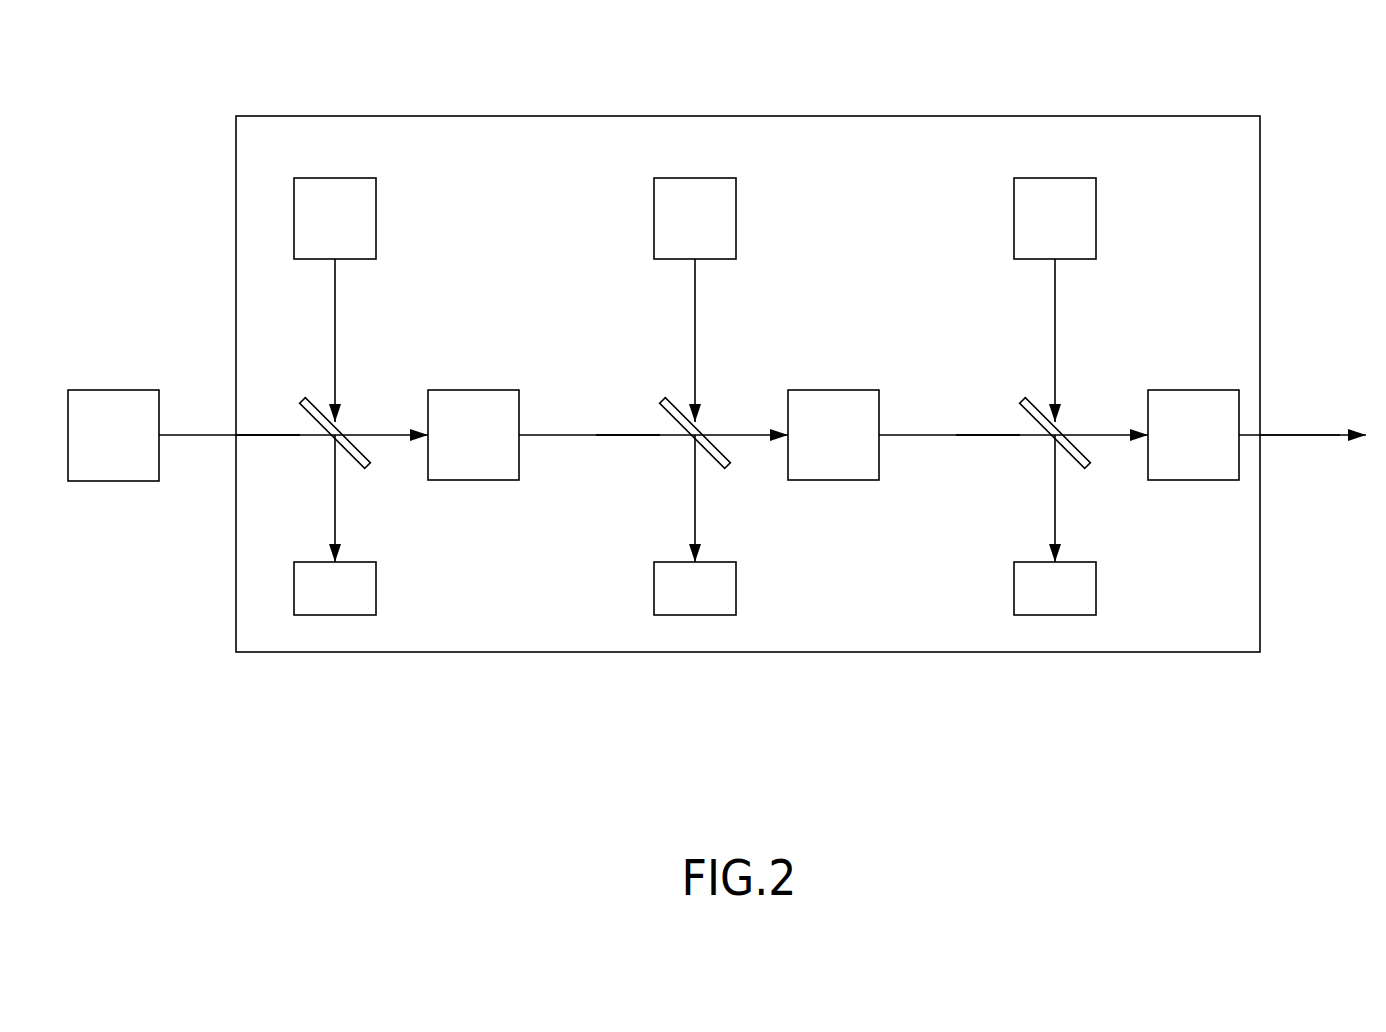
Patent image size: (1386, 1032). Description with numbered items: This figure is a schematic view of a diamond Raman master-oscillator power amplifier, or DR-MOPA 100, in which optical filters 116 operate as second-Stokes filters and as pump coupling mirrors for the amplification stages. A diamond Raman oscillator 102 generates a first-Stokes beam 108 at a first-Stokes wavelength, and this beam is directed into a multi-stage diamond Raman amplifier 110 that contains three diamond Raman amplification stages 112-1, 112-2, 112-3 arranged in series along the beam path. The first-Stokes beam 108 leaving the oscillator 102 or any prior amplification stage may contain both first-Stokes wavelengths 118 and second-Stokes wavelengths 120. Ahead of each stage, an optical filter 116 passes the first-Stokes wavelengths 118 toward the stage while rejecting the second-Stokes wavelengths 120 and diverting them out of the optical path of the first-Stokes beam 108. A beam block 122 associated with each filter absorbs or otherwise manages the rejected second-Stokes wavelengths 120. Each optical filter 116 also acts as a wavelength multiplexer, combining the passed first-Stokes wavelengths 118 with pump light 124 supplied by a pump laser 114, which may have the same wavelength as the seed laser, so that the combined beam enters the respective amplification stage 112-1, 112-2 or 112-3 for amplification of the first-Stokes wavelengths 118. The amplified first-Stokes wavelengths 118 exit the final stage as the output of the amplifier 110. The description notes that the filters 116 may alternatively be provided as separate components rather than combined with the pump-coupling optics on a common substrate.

The DR-MOPA 100 is at (433, 74).
The diamond Raman oscillator 102 is at (94, 447).
The first-Stokes beam 108 is at (199, 433).
The multi-stage diamond Raman amplifier 110 is at (279, 144).
The first diamond Raman amplification stage 112-1 is at (443, 447).
The second diamond Raman amplification stage 112-2 is at (803, 447).
The third diamond Raman amplification stage 112-3 is at (1163, 447).
The pump laser 114 is at (316, 229).
The optical filter 116 is at (356, 468).
The first-Stokes wavelengths 118 is at (279, 433).
The second-Stokes wavelengths 120 is at (255, 437).
The beam block 122 is at (316, 599).
The pump light 124 is at (336, 322).